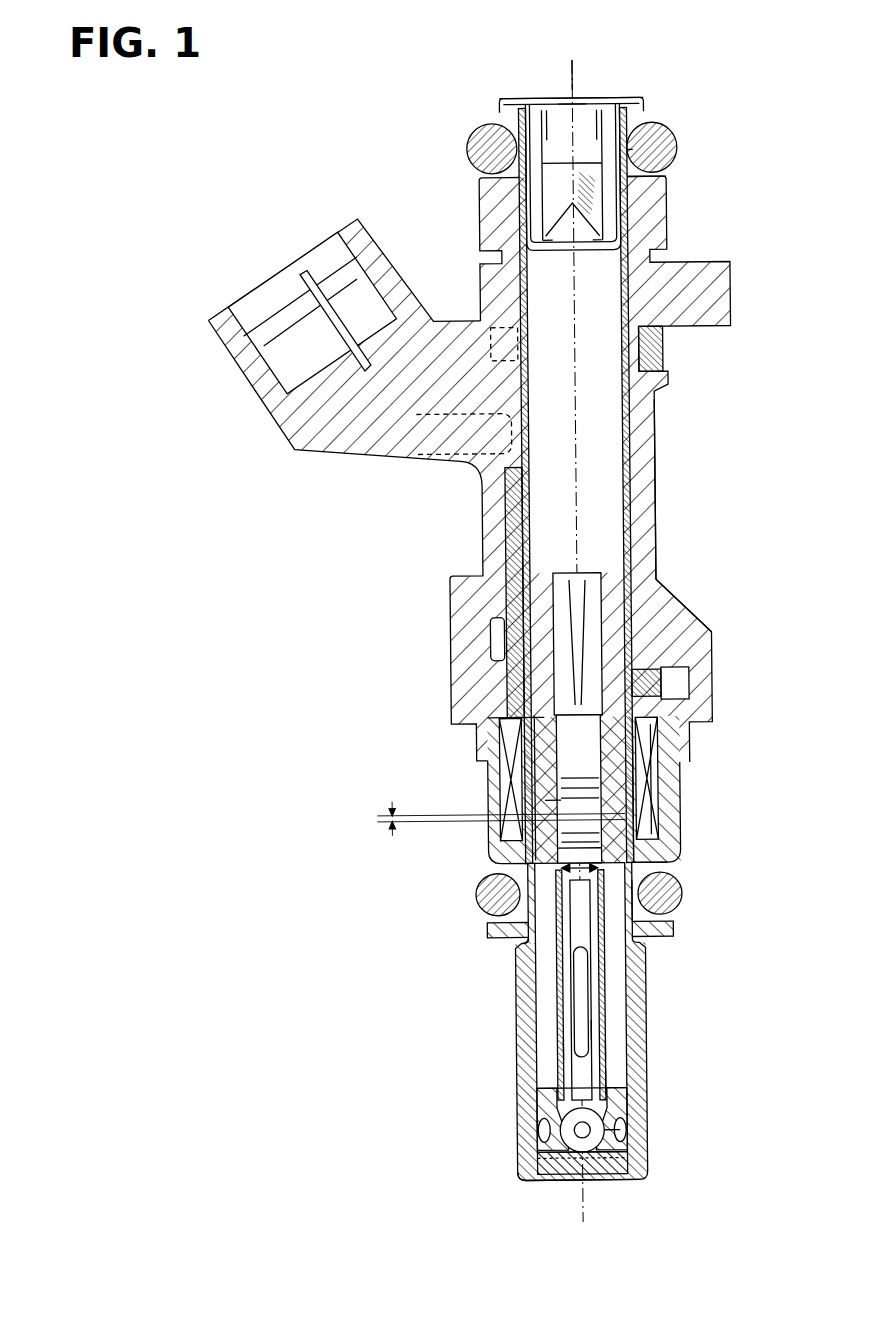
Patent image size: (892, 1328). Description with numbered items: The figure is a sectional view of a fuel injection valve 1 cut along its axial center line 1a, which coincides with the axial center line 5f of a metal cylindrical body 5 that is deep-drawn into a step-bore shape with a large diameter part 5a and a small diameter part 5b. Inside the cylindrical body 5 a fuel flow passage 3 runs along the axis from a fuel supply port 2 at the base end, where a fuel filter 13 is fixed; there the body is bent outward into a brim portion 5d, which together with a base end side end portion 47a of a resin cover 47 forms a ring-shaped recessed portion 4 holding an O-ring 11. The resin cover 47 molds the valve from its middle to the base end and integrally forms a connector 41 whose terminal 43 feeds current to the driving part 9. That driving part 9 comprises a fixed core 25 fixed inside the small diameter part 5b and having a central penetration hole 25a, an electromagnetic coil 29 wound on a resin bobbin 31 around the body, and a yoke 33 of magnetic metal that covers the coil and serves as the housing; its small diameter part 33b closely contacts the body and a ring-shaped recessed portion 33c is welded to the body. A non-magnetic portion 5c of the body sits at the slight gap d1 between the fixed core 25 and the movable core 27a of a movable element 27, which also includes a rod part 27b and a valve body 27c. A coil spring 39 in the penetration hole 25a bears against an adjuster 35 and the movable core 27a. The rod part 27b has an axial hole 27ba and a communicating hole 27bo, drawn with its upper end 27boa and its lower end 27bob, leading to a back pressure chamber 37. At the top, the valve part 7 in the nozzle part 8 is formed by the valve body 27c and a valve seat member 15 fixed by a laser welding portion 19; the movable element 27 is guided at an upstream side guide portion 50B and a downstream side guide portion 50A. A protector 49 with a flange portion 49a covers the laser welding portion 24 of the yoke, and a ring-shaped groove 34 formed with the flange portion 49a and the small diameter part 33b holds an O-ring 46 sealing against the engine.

The fuel injection valve 1 is at (689, 73).
The axial center line 1a is at (586, 80).
The fuel supply port 2 is at (567, 108).
The fuel flow passage 3 is at (602, 535).
The ring-shaped recessed portion 4 is at (630, 157).
The cylindrical body 5 is at (629, 467).
The large diameter part 5a is at (656, 420).
The small diameter part 5b is at (644, 650).
The non-magnetic portion 5c is at (664, 840).
The brim portion 5d is at (642, 112).
The axial center line of cylindrical body 5f is at (588, 1205).
The valve part 7 is at (420, 1113).
The nozzle part 8 is at (519, 1187).
The driving part 9 is at (674, 810).
The O-ring 11 is at (667, 140).
The fuel filter 13 is at (541, 218).
The valve seat member 15 is at (545, 1122).
The laser welding portion 19 is at (628, 1118).
The laser welding portion 24 is at (672, 930).
The fixed core 25 is at (652, 686).
The penetration hole 25a is at (548, 760).
The movable element 27 is at (553, 960).
The movable core 27a is at (627, 870).
The rod part 27b is at (605, 1000).
The hole 27ba is at (523, 1040).
The communicating hole 27bo is at (590, 1030).
The opening upper end 27boa is at (657, 905).
The opening lower end 27bob is at (612, 1082).
The valve body 27c is at (530, 1158).
The electromagnetic coil 29 is at (654, 737).
The bobbin 31 is at (642, 770).
The yoke 33 is at (548, 795).
The small diameter part 33b is at (504, 934).
The ring-shaped recessed portion 33c is at (632, 945).
The ring-shaped groove 34 is at (514, 886).
The adjuster 35 is at (565, 648).
The back pressure chamber 37 is at (605, 1050).
The coil spring 39 is at (544, 722).
The connector 41 is at (326, 255).
The terminal 43 is at (305, 288).
The O-ring 46 is at (492, 900).
The resin cover 47 is at (492, 524).
The base end side end portion 47a is at (656, 170).
The protector 49 is at (523, 1007).
The flange portion 49a is at (530, 945).
The downstream side guide portion 50A is at (622, 1132).
The upstream side guide portion 50B is at (565, 850).
The slight gap d1 is at (490, 818).